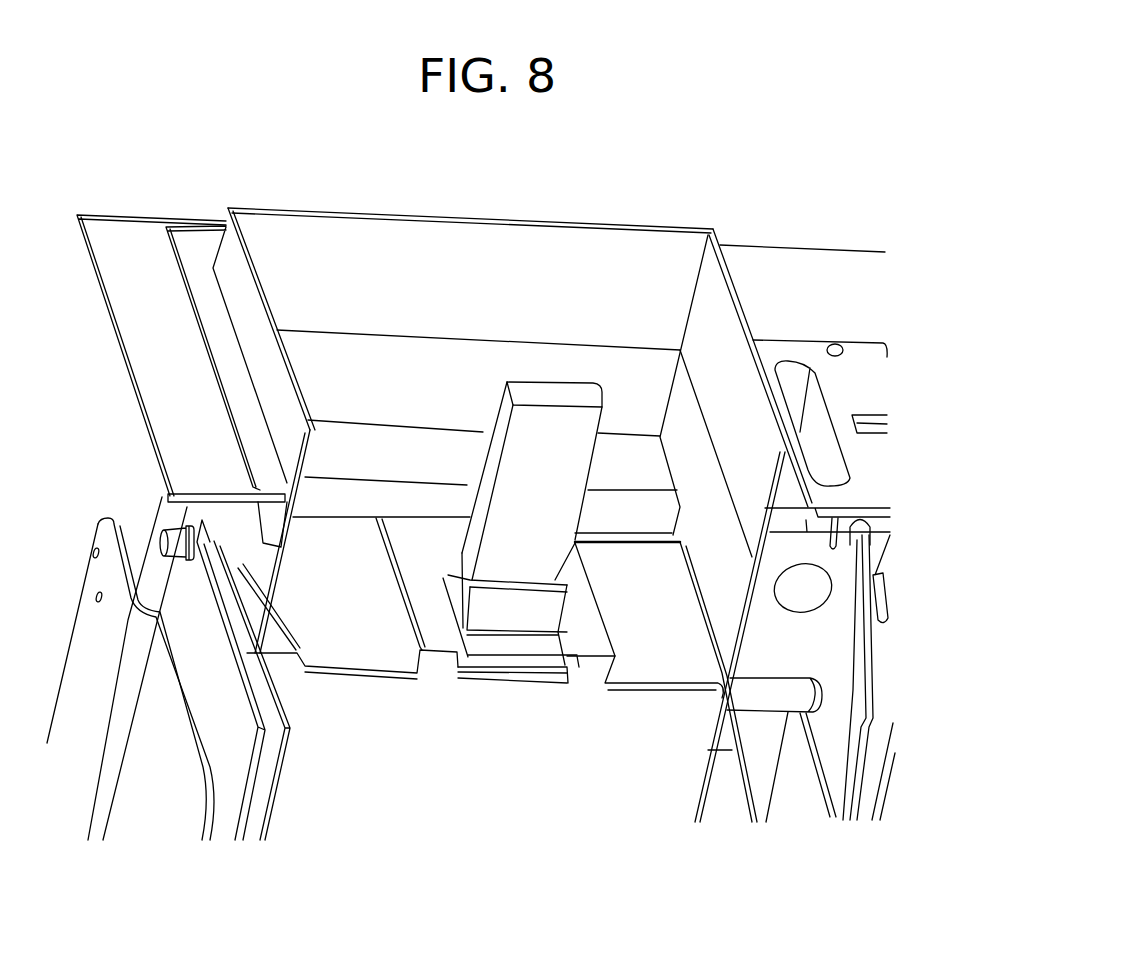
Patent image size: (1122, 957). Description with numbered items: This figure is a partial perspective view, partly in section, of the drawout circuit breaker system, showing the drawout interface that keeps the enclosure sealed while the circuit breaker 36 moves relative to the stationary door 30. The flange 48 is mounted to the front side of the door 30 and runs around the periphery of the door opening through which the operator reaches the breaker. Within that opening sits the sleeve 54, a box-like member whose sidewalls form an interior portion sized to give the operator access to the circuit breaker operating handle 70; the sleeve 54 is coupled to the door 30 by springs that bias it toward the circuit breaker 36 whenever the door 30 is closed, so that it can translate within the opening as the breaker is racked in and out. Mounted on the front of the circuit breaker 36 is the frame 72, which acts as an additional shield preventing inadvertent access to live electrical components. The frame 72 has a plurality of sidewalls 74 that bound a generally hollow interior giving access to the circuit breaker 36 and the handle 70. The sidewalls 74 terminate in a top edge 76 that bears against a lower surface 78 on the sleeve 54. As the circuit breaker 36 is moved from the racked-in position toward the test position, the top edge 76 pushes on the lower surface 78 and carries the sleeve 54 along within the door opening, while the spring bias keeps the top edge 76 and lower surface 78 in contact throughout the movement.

The door 30 is at (113, 322).
The circuit breaker 36 is at (642, 562).
The flange 48 is at (203, 223).
The sleeve 54 is at (442, 233).
The circuit breaker operating handle 70 is at (553, 397).
The frame 72 is at (238, 570).
The sidewalls 74 is at (427, 388).
The top edge 76 is at (285, 542).
The lower surface 78 is at (787, 582).